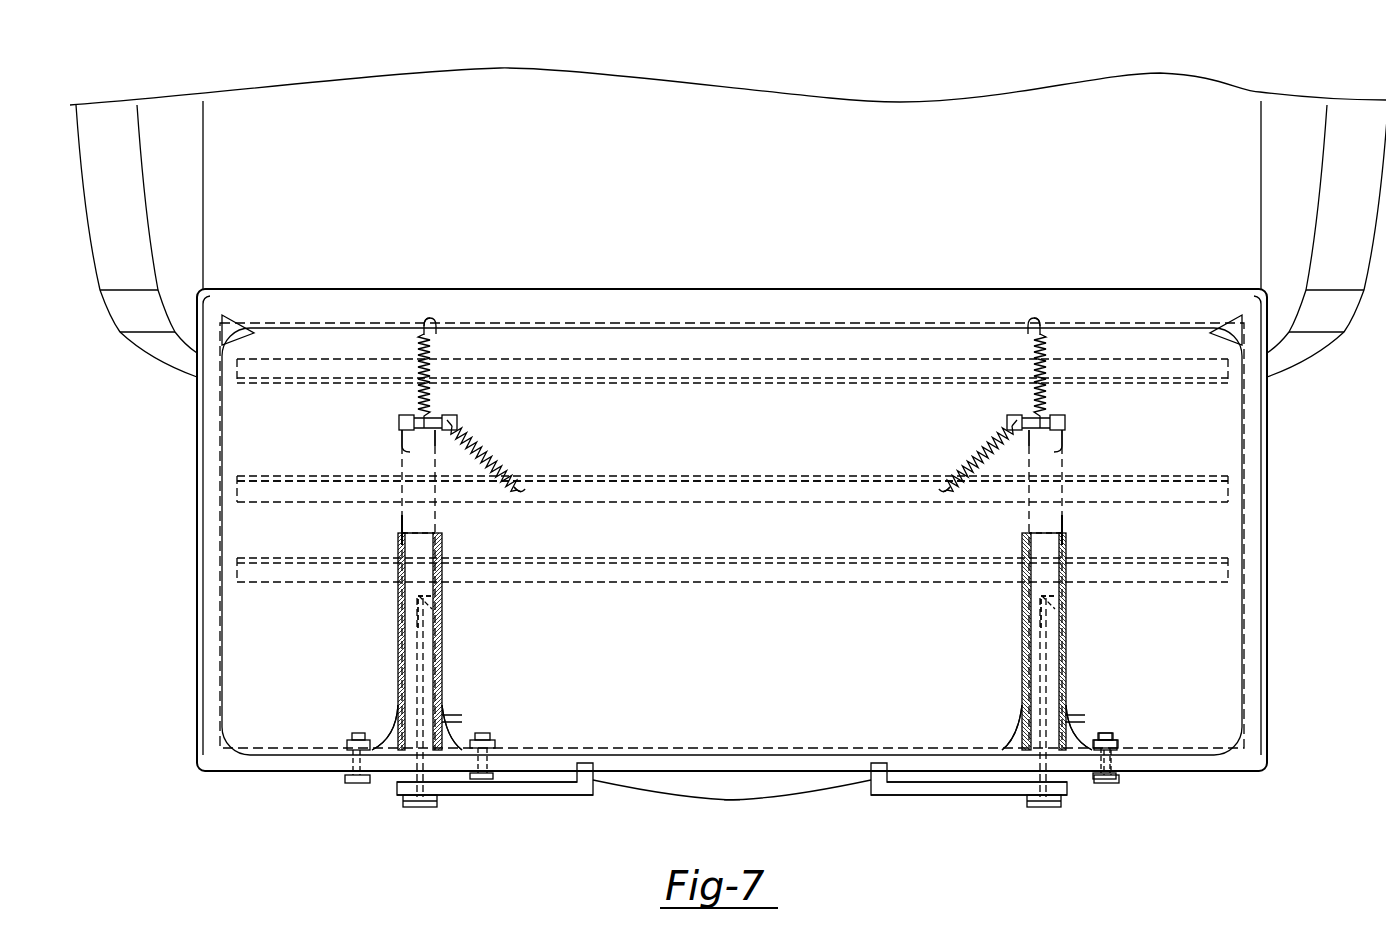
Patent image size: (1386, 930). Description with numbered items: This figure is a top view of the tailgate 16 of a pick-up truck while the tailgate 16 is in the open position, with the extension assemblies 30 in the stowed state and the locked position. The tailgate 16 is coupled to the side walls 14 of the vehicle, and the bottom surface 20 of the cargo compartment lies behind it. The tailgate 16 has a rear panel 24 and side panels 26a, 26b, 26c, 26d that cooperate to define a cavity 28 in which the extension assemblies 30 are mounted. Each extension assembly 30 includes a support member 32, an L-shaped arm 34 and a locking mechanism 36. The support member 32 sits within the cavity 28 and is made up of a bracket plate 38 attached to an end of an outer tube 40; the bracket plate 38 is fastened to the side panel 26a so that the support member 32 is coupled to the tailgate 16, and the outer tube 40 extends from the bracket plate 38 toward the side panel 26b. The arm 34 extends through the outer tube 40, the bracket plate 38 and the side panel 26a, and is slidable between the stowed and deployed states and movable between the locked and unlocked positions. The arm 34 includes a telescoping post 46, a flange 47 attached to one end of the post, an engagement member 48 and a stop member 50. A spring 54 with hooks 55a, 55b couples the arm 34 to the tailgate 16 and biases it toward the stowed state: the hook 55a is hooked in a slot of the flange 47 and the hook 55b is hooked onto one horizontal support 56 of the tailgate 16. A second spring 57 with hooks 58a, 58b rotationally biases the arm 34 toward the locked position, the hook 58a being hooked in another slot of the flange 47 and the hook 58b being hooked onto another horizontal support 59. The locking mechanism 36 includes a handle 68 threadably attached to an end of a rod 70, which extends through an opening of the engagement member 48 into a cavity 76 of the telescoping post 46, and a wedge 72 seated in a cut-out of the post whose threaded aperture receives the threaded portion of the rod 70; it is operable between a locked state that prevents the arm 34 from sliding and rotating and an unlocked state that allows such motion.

The side walls 14 is at (107, 150).
The tailgate 16 is at (1272, 560).
The bottom surface 20 is at (915, 118).
The rear panel 24 is at (1228, 655).
The side panel 26a is at (1167, 773).
The side panel 26b is at (870, 289).
The side panel 26c is at (197, 462).
The side panel 26d is at (1267, 460).
The cavity 28 is at (1228, 610).
The extension assembly 30 is at (450, 668).
The support member 32 is at (382, 722).
The L-shaped arm 34 is at (470, 797).
The locking mechanism 36 is at (436, 632).
The bracket plate 38 is at (340, 722).
The outer tube 40 is at (415, 598).
The telescoping post 46 is at (438, 533).
The flange 47 is at (398, 423).
The engagement member 48 is at (555, 797).
The stop member 50 is at (872, 778).
The spring 54 is at (408, 345).
The hook 55a is at (400, 446).
The hook 55b is at (467, 325).
The horizontal support 56 is at (668, 359).
The spring 57 is at (500, 436).
The hook 58a is at (452, 420).
The hook 58b is at (520, 492).
The horizontal support 59 is at (725, 476).
The handle 68 is at (415, 810).
The rod 70 is at (450, 715).
The wedge 72 is at (415, 618).
The cavity 76 is at (400, 522).